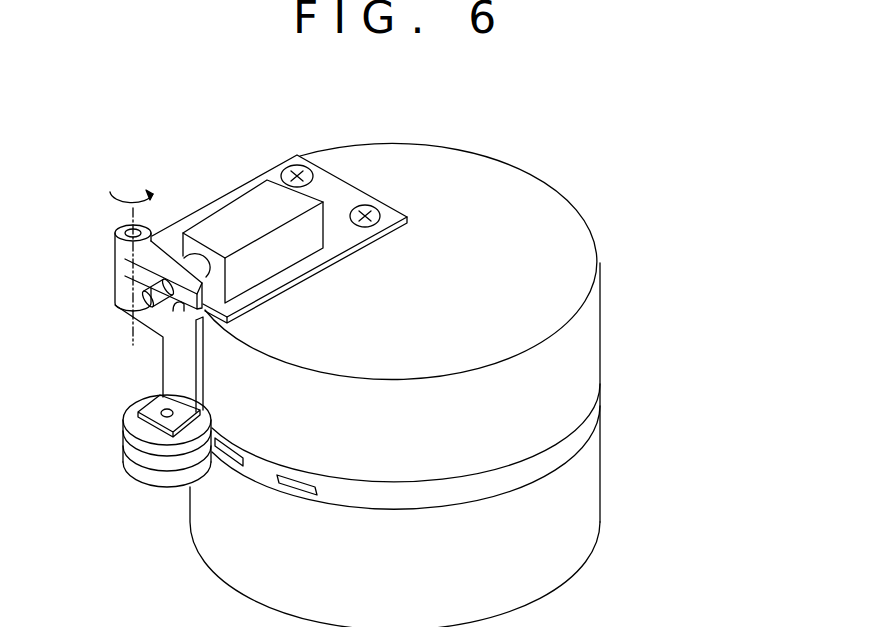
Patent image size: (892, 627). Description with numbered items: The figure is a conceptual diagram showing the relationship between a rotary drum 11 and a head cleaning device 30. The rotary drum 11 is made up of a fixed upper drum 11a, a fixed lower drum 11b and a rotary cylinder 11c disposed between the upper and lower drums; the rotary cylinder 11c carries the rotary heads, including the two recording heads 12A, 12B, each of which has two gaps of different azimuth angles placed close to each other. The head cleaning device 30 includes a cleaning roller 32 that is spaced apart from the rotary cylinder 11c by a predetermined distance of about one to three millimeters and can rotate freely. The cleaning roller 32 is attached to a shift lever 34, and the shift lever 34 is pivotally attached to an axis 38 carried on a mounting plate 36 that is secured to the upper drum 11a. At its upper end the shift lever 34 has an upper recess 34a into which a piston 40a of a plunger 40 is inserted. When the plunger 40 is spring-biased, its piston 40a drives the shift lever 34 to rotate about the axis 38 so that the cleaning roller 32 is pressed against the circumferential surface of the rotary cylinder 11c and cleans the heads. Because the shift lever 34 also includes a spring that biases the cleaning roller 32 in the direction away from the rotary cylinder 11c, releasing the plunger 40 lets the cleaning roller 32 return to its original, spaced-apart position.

The head cleaning device 30 is at (112, 86).
The rotary drum 11 is at (712, 343).
The upper drum 11a is at (563, 362).
The lower drum 11b is at (560, 517).
The rotary cylinder 11c is at (563, 443).
The recording head 12A is at (229, 466).
The recording head 12B is at (290, 482).
The cleaning roller 32 is at (143, 480).
The shift lever 34 is at (202, 386).
The upper recess 34a is at (183, 307).
The mounting plate 36 is at (345, 253).
The axis 38 is at (133, 335).
The plunger 40 is at (215, 212).
The piston 40a is at (137, 293).